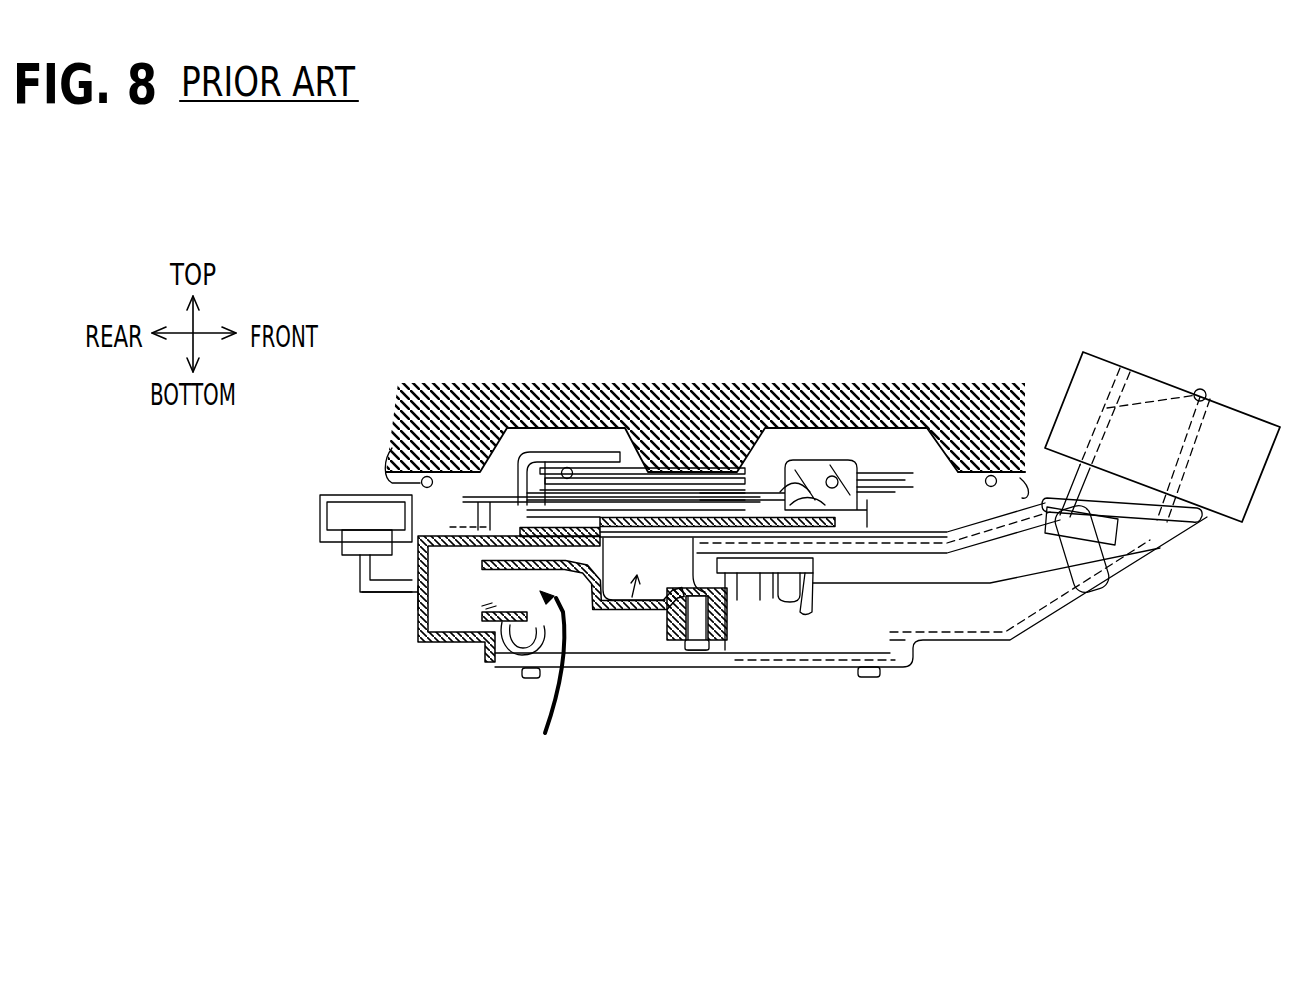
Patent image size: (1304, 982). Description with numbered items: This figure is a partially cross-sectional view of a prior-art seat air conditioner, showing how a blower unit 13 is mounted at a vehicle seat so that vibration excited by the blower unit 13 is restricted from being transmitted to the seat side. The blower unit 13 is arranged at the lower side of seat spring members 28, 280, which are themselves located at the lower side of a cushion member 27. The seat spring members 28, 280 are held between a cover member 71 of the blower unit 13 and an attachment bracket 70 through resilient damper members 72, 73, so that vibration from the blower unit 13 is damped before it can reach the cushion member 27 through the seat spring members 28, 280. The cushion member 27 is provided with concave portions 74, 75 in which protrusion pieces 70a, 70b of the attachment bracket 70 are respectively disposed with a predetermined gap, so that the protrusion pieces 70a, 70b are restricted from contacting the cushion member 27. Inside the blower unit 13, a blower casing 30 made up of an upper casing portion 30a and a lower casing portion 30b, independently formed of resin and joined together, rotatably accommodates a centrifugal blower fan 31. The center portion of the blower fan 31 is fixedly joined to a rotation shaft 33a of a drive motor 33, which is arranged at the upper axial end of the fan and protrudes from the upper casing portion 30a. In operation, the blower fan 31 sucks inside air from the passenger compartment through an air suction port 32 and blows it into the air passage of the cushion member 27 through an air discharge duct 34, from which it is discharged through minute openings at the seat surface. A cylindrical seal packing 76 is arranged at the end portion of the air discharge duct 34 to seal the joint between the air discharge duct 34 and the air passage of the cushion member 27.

The blower unit 13 is at (456, 680).
The cushion member 27 is at (950, 462).
The seat spring member 28 is at (420, 483).
The blower casing 30 is at (233, 553).
The upper casing portion 30a is at (412, 555).
The lower casing portion 30b is at (418, 610).
The blower fan 31 is at (482, 612).
The air suction port 32 is at (600, 640).
The drive motor 33 is at (643, 640).
The rotation shaft 33a is at (727, 625).
The air discharge duct 34 is at (1147, 560).
The attachment bracket 70 is at (742, 485).
The protrusion piece 70a is at (795, 465).
The protrusion piece 70b is at (505, 430).
The cover member 71 is at (655, 510).
The resilient damper member 72 is at (765, 470).
The resilient damper member 73 is at (528, 450).
The concave portion 74 is at (828, 445).
The concave portion 75 is at (483, 450).
The cylindrical seal packing 76 is at (1222, 428).
The seat spring member 280 is at (858, 478).